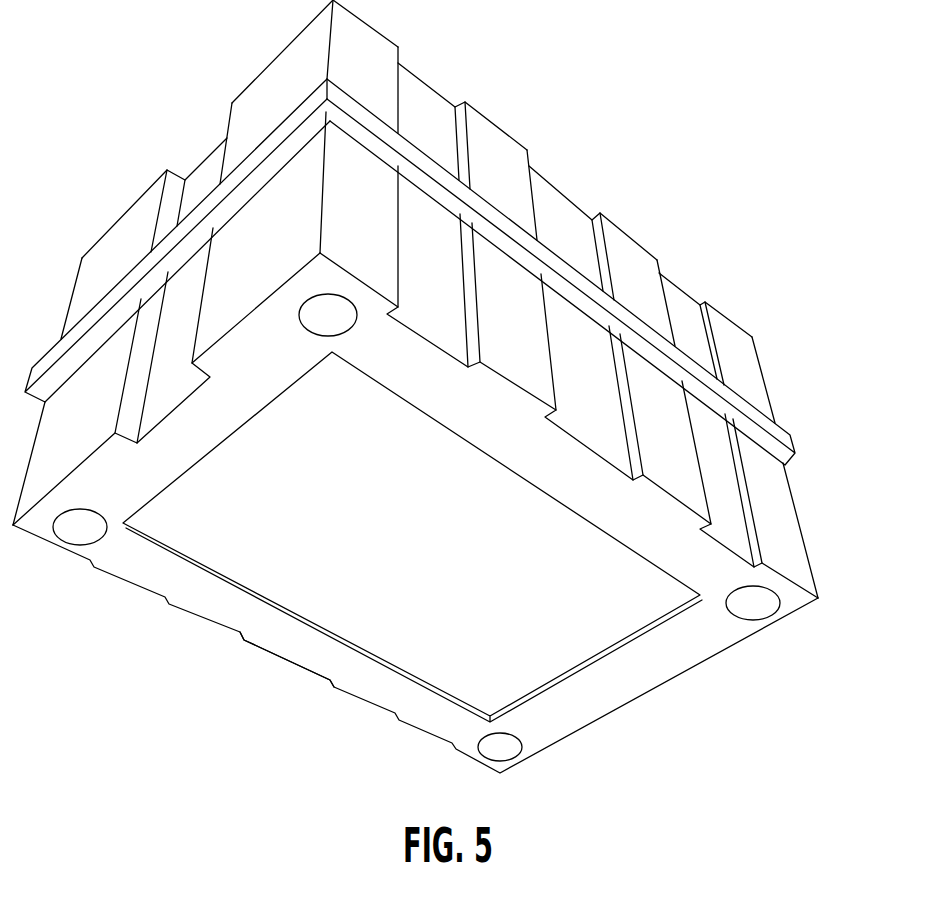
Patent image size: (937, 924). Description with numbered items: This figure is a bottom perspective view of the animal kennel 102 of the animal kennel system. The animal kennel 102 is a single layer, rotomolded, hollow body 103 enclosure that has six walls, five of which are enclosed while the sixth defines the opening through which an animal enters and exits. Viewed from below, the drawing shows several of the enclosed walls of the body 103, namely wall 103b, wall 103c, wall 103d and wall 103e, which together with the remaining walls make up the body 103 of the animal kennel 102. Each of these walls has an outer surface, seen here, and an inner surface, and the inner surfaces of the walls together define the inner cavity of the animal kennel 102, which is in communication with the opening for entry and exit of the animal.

The animal kennel 102 is at (415, 387).
The body 103 is at (617, 223).
The wall 103b is at (305, 535).
The wall 103c is at (617, 333).
The wall 103d is at (283, 660).
The wall 103e is at (277, 208).